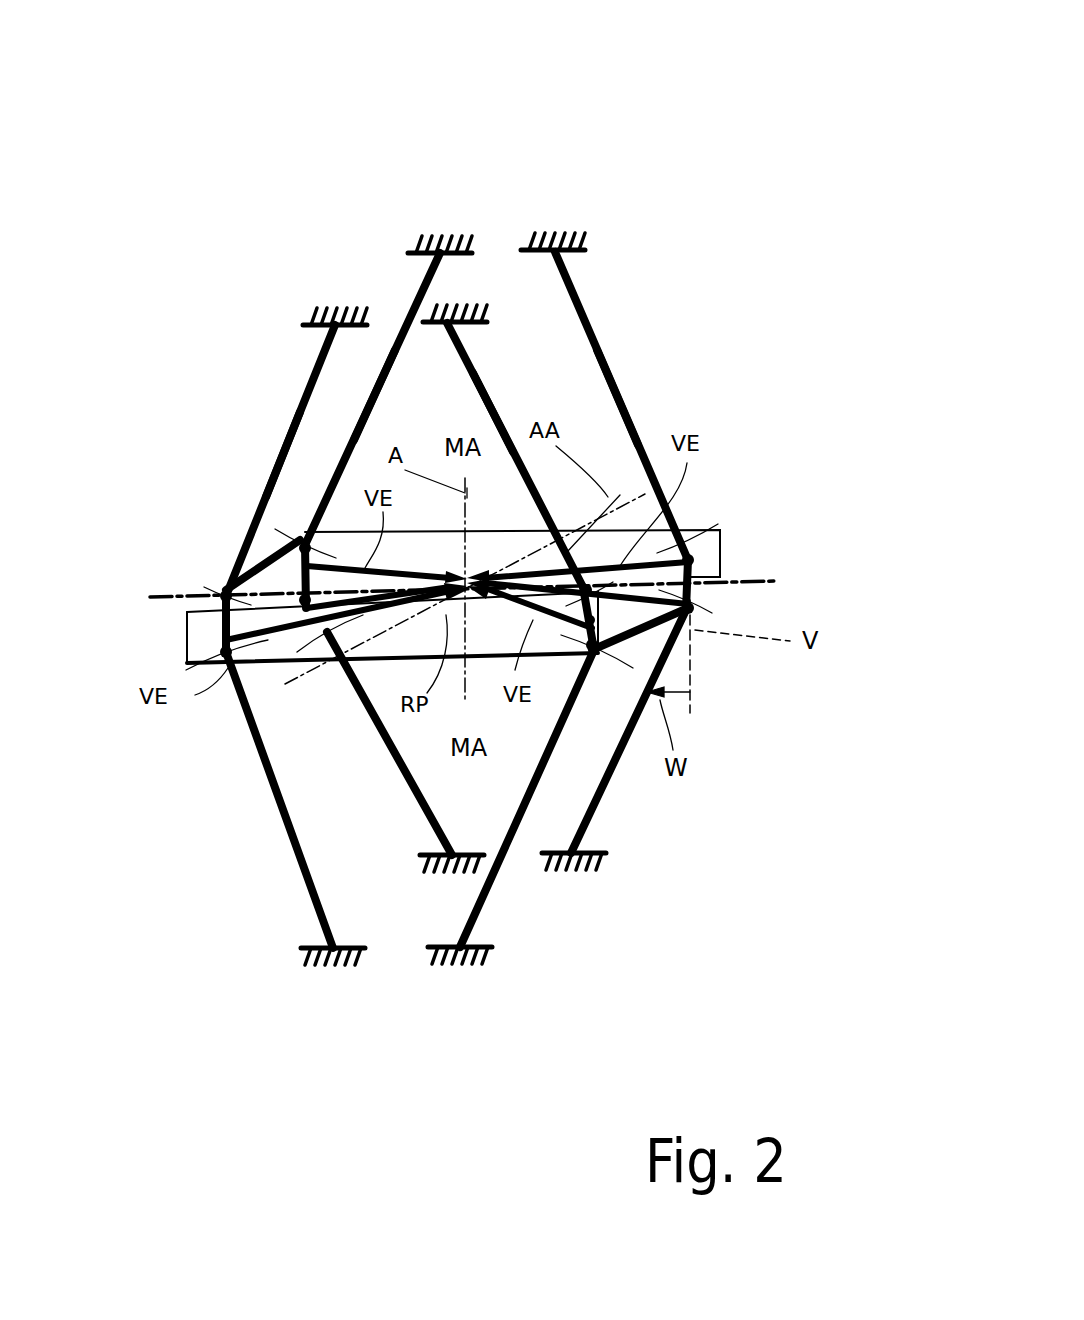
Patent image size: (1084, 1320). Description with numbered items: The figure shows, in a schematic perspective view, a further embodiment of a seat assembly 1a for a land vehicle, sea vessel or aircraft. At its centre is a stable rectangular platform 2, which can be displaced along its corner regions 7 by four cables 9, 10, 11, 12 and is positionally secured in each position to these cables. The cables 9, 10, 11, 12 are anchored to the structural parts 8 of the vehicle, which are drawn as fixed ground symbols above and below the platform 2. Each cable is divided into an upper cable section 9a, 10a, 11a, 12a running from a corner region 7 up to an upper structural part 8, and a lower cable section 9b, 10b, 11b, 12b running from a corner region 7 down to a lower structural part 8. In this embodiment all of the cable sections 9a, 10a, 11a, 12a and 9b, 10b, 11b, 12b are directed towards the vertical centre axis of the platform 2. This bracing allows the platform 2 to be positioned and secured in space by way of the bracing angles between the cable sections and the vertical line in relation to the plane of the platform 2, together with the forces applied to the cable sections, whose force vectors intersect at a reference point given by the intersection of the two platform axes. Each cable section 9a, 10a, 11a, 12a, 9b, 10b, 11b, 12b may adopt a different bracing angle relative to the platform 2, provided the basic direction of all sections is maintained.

The seat assembly 1a is at (750, 146).
The platform 2 is at (730, 536).
The corner regions 7 is at (293, 535).
The structural parts 8 is at (331, 305).
The cable 9 is at (302, 390).
The cable section 9a is at (276, 472).
The cable section 9b is at (252, 737).
The cable 10 is at (382, 365).
The cable section 10a is at (367, 410).
The cable section 10b is at (368, 705).
The cable 11 is at (602, 321).
The cable section 11a is at (617, 397).
The cable section 11b is at (613, 767).
The cable 12 is at (474, 356).
The cable section 12a is at (497, 400).
The cable section 12b is at (523, 793).